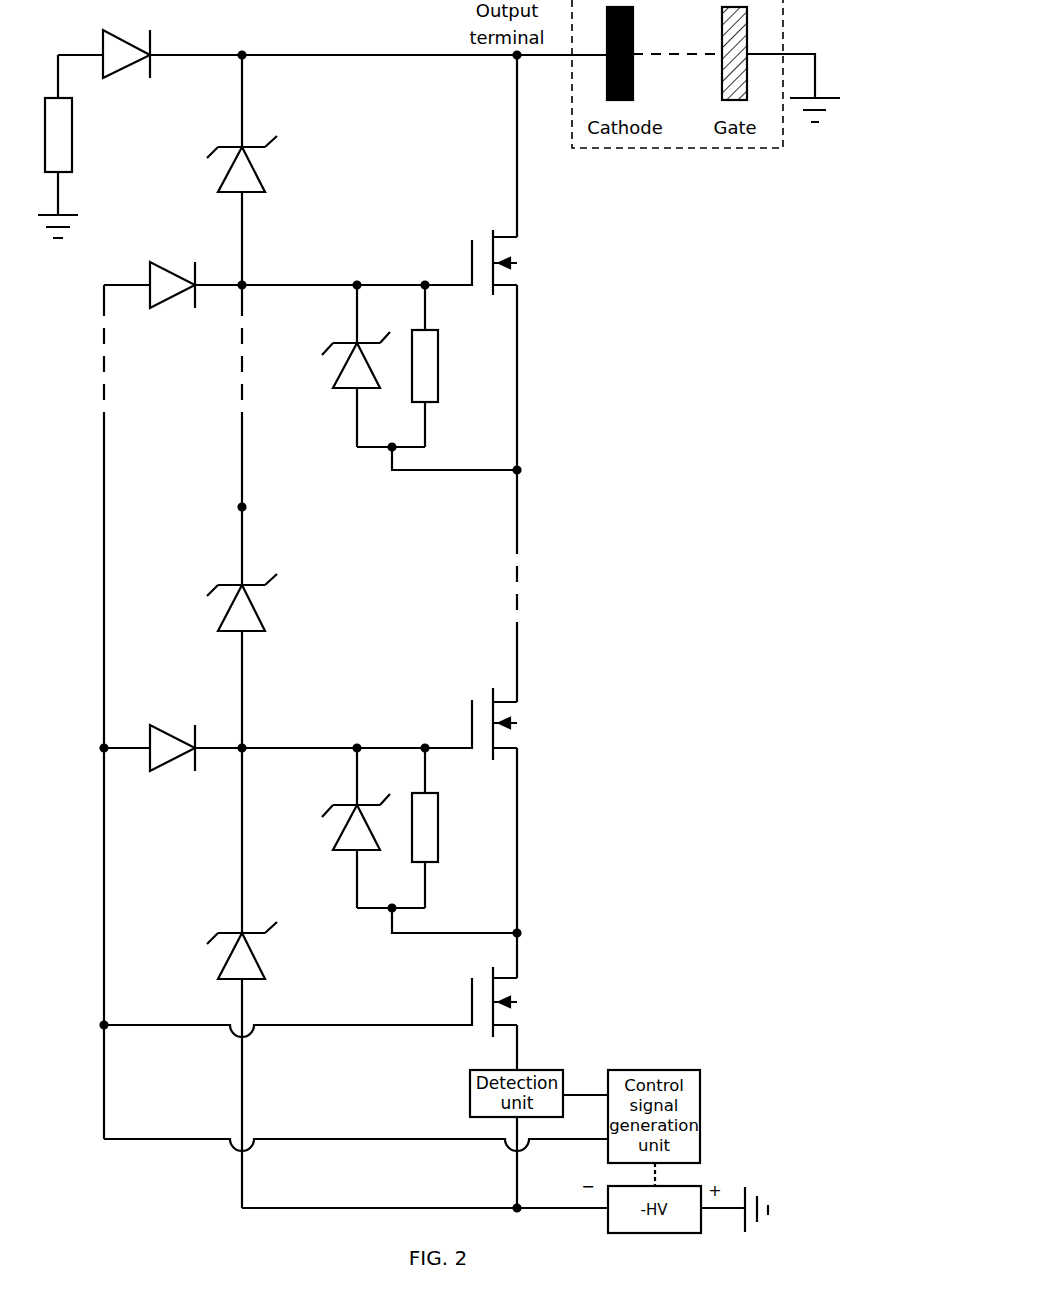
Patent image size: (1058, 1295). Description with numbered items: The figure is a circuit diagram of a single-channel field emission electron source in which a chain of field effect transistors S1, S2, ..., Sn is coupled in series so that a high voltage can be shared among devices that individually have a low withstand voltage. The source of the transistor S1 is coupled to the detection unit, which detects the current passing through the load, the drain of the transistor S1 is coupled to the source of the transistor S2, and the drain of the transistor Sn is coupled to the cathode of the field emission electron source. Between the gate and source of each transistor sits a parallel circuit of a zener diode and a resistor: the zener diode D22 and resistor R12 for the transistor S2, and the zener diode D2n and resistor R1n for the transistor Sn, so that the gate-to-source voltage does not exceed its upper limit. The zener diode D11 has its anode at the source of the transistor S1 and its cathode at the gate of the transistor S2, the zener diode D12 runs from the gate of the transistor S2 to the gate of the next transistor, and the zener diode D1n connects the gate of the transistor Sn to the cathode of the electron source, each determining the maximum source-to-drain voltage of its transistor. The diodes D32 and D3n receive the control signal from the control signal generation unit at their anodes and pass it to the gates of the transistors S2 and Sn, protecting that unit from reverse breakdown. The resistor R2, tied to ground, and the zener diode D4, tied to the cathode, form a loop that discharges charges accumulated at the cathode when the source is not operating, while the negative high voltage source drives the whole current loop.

The resistor R2 is at (79, 135).
The zener diode D4 is at (126, 73).
The zener diode D1n is at (260, 181).
The zener diode D12 is at (263, 620).
The zener diode D11 is at (259, 969).
The diode D3n is at (174, 304).
The zener diode D2n is at (343, 366).
The resistor R1n is at (448, 366).
The field effect transistor Sn is at (531, 262).
The diode D32 is at (174, 765).
The zener diode D22 is at (343, 828).
The resistor R12 is at (448, 828).
The field effect transistor S2 is at (532, 724).
The field effect transistor S1 is at (532, 1002).